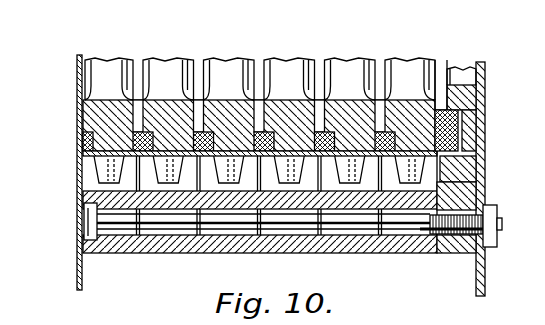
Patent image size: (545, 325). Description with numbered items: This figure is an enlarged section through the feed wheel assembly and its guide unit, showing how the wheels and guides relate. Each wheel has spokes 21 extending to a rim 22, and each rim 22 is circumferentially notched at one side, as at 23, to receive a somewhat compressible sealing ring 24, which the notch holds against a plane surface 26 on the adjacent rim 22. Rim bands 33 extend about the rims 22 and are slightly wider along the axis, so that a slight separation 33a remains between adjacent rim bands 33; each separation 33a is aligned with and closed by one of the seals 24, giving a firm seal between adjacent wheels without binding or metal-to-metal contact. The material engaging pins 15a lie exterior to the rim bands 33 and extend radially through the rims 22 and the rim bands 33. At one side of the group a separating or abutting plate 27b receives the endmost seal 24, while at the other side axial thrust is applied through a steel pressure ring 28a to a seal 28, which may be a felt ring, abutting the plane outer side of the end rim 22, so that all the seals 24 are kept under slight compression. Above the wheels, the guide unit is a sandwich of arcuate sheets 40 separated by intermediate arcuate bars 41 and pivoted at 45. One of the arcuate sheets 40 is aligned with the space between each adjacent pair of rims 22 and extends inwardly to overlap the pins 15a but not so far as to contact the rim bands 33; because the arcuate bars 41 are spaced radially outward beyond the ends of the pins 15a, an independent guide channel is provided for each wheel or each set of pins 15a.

The spokes 21 is at (102, 64).
The rim 22 is at (100, 113).
The notch 23 is at (90, 142).
The sealing ring 24 is at (149, 137).
The plane surface 26 is at (199, 133).
The seal 28 is at (453, 125).
The steel pressure ring 28a is at (460, 143).
The rim band 33 is at (95, 172).
The separation 33a is at (256, 163).
The pins 15a is at (87, 160).
The separating plate 27b is at (80, 272).
The arcuate sheets 40 is at (137, 253).
The arcuate bars 41 is at (166, 255).
The pivot 45 is at (360, 233).